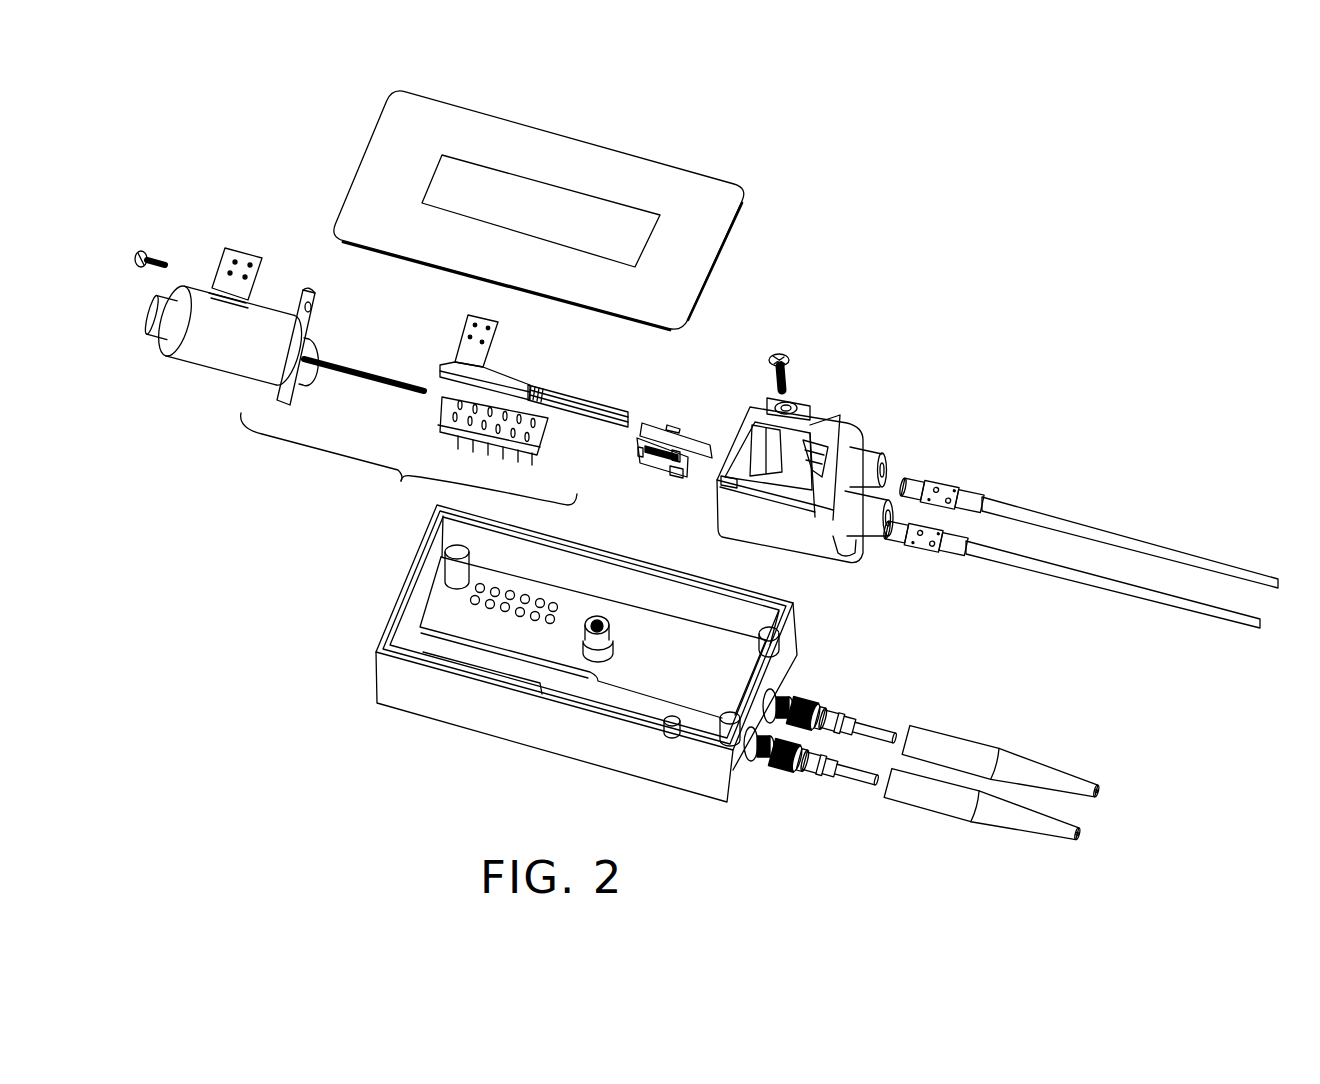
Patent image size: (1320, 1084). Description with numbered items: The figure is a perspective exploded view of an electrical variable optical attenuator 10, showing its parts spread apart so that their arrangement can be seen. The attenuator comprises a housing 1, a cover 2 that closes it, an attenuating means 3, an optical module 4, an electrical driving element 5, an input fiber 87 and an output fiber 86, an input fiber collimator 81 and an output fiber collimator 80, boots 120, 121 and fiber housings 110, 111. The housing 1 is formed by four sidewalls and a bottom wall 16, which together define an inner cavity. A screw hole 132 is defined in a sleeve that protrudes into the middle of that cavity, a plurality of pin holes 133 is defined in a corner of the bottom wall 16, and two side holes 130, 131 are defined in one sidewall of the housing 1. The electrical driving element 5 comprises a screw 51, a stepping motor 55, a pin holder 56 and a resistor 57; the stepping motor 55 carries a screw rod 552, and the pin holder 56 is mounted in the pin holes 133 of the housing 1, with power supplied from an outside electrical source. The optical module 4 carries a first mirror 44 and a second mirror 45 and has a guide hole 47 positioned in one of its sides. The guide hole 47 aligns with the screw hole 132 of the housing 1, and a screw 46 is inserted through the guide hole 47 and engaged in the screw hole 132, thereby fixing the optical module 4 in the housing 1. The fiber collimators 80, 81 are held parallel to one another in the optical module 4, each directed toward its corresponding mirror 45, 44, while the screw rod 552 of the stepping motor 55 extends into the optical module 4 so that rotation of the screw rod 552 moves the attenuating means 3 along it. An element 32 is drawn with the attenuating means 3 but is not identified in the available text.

The electrical variable optical attenuator 10 is at (1125, 257).
The housing 1 is at (420, 707).
The cover 2 is at (713, 208).
The attenuating means 3 is at (646, 476).
The terminal plate of connector 32 is at (706, 443).
The optical module 4 is at (868, 428).
The first mirror 44 is at (818, 457).
The second mirror 45 is at (795, 497).
The screw 46 is at (777, 352).
The guide hole 47 is at (788, 406).
The electrical driving element 5 is at (409, 412).
The screw 51 is at (143, 247).
The stepping motor 55 is at (223, 388).
The screw rod 552 is at (358, 363).
The pin holder 56 is at (465, 428).
The resistor 57 is at (578, 399).
The bottom wall 16 is at (450, 652).
The side hole 130 is at (787, 693).
The side hole 131 is at (763, 768).
The screw hole 132 is at (620, 607).
The pin holes 133 is at (548, 602).
The output fiber collimator 80 is at (925, 547).
The input fiber collimator 81 is at (957, 492).
The output fiber 86 is at (1080, 577).
The input fiber 87 is at (1090, 529).
The fiber housing 110 is at (843, 717).
The fiber housing 111 is at (827, 776).
The boot 120 is at (1042, 770).
The boot 121 is at (1018, 822).